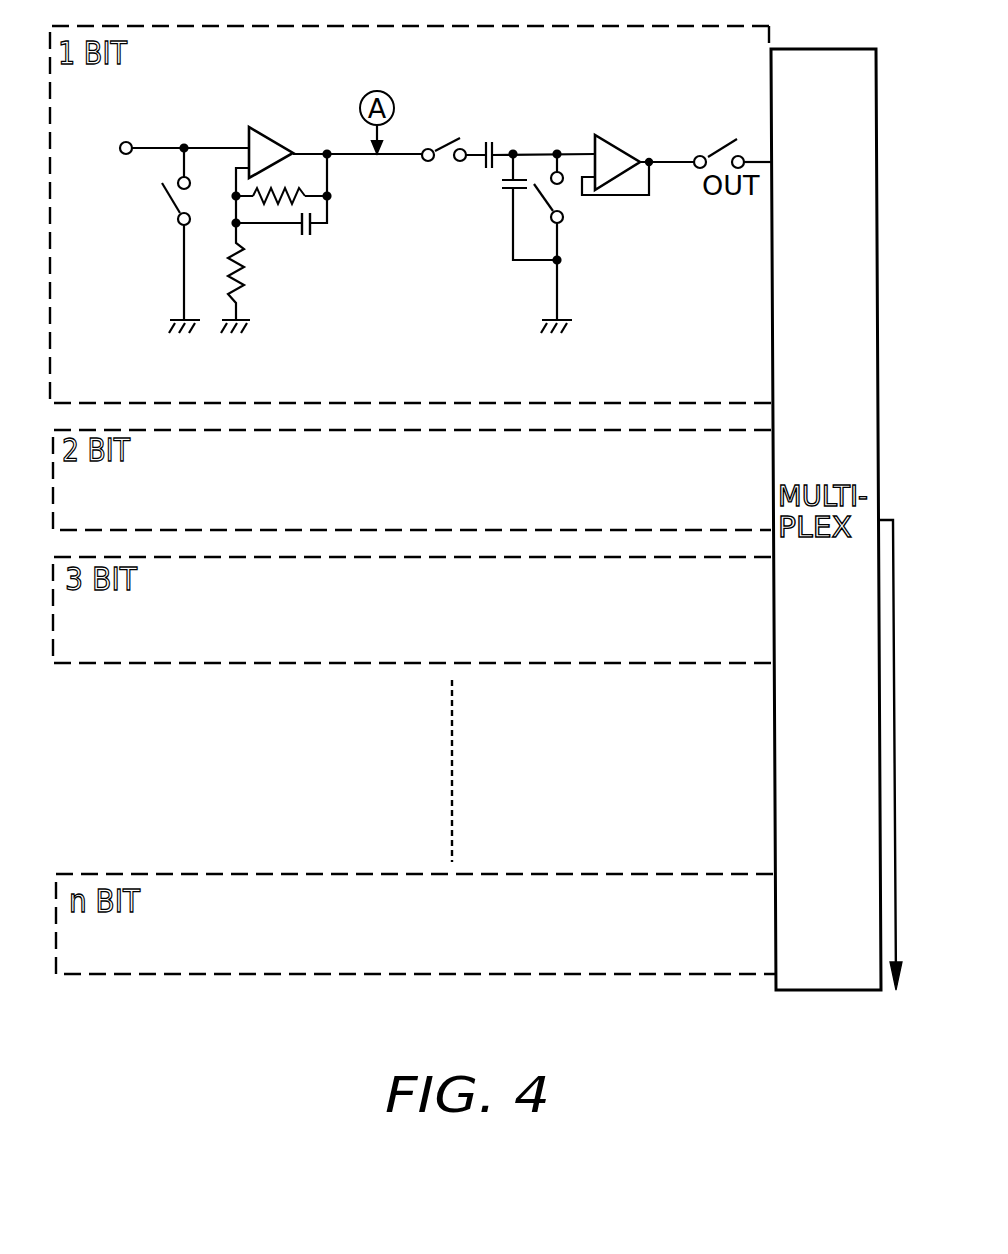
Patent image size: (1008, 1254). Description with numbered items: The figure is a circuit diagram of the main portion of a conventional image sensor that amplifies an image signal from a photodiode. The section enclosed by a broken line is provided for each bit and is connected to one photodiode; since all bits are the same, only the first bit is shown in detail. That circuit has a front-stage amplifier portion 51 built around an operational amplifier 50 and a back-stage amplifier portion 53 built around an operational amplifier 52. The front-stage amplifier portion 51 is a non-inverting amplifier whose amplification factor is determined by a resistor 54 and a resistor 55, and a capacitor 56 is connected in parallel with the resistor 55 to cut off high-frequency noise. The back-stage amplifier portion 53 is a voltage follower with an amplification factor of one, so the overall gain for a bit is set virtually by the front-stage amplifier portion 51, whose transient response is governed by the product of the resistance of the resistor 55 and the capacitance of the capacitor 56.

The operational amplifier 50 is at (248, 133).
The front-stage amplifier portion 51 is at (317, 244).
The operational amplifier 52 is at (628, 152).
The back-stage amplifier portion 53 is at (617, 232).
The resistor 54 is at (230, 284).
The resistor 55 is at (305, 191).
The capacitor 56 is at (313, 231).